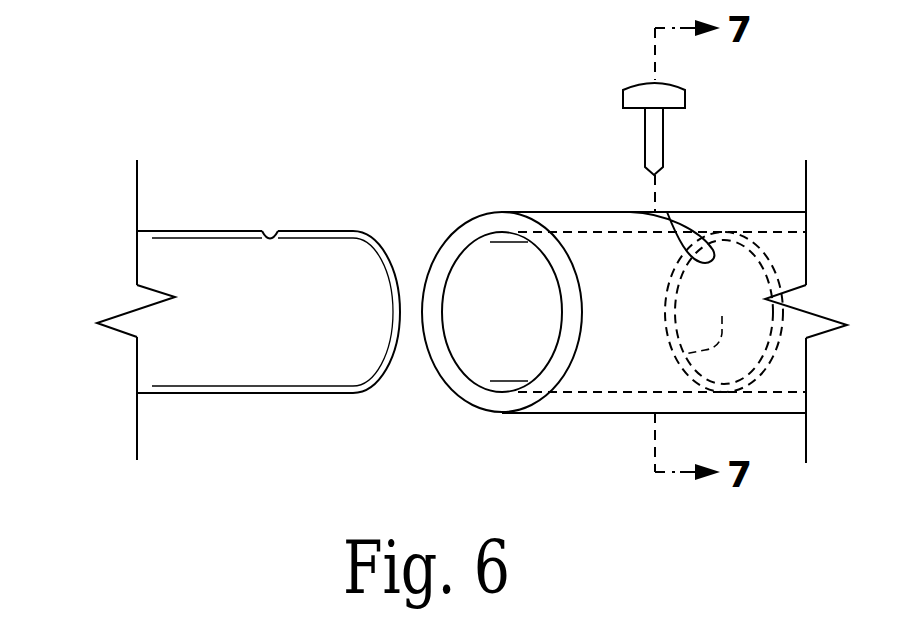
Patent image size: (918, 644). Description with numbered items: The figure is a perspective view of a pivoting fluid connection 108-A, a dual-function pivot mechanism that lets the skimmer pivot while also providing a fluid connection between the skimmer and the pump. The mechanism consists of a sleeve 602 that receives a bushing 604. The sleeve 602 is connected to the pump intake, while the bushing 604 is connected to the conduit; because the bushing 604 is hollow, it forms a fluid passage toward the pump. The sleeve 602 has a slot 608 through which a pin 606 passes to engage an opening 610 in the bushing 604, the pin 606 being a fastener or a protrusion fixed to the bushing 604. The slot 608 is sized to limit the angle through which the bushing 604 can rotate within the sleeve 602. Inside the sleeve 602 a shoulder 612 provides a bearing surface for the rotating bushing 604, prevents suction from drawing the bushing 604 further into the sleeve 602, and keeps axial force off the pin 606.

The pivoting fluid connection 108-A is at (298, 110).
The sleeve 602 is at (570, 413).
The bushing 604 is at (275, 393).
The pin 606 is at (623, 105).
The slot 608 is at (697, 220).
The opening 610 is at (272, 230).
The shoulder 612 is at (724, 312).